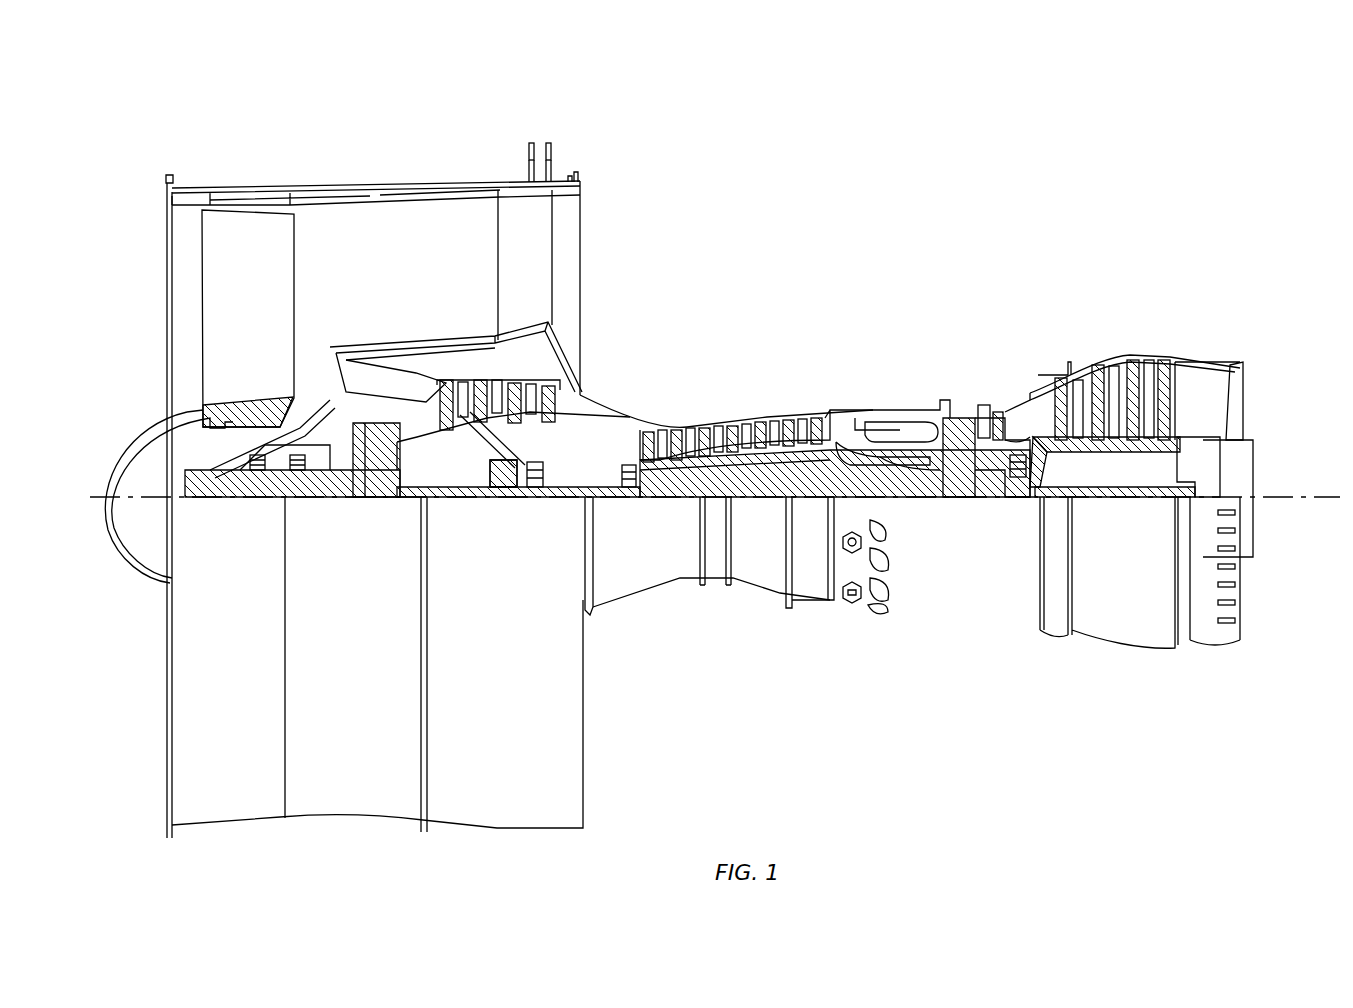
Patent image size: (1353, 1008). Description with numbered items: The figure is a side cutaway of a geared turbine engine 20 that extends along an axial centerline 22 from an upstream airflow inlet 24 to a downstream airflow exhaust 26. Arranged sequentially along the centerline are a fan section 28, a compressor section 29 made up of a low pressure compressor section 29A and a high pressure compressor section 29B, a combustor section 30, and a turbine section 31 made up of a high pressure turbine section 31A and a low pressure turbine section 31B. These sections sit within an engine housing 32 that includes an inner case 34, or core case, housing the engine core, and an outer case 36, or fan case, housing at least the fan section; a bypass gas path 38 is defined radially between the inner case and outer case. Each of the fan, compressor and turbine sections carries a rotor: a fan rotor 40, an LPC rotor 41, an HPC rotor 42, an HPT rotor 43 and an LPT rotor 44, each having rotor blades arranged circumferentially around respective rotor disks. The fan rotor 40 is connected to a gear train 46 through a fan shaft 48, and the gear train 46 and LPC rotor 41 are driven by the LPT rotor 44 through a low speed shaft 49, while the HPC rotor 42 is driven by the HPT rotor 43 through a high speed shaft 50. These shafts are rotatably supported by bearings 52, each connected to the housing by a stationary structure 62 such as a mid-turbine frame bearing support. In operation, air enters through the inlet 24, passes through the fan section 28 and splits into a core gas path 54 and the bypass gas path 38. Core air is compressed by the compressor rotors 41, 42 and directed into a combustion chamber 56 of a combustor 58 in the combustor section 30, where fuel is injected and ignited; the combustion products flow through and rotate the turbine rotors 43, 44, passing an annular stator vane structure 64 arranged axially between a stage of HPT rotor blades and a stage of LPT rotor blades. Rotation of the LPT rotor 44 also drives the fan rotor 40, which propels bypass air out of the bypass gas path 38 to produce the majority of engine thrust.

The geared turbine engine 20 is at (136, 162).
The axial centerline 22 is at (1305, 505).
The upstream airflow inlet 24 is at (167, 258).
The downstream airflow exhaust 26 is at (1243, 400).
The fan section 28 is at (340, 158).
The compressor section 29 is at (808, 100).
The low pressure compressor section 29A is at (583, 142).
The high pressure compressor section 29B is at (808, 337).
The combustor section 30 is at (935, 337).
The turbine section 31 is at (1203, 270).
The high pressure turbine section 31A is at (1020, 337).
The low pressure turbine section 31B is at (1203, 337).
The engine housing 32 is at (600, 612).
The inner case 34 is at (810, 602).
The outer case 36 is at (520, 830).
The bypass gas path 38 is at (428, 274).
The fan rotor 40 is at (190, 420).
The LPC rotor 41 is at (490, 450).
The HPC rotor 42 is at (758, 460).
The HPT rotor 43 is at (960, 470).
The LPT rotor 44 is at (1115, 448).
The gear train 46 is at (376, 500).
The fan shaft 48 is at (240, 500).
The low speed shaft 49 is at (1125, 497).
The high speed shaft 50 is at (900, 478).
The bearings 52 is at (295, 470).
The core gas path 54 is at (398, 384).
The combustion chamber 56 is at (893, 430).
The combustor 58 is at (915, 425).
The stationary structure 62 is at (1010, 425).
The annular stator vane structure 64 is at (988, 418).